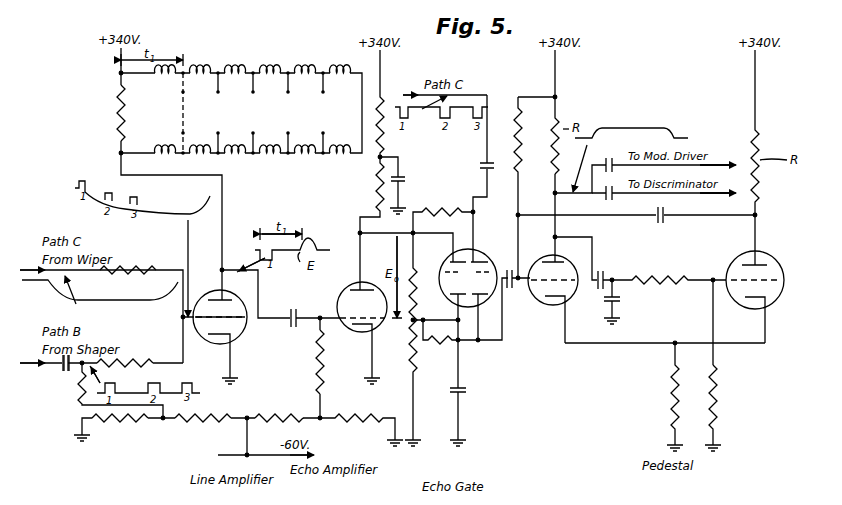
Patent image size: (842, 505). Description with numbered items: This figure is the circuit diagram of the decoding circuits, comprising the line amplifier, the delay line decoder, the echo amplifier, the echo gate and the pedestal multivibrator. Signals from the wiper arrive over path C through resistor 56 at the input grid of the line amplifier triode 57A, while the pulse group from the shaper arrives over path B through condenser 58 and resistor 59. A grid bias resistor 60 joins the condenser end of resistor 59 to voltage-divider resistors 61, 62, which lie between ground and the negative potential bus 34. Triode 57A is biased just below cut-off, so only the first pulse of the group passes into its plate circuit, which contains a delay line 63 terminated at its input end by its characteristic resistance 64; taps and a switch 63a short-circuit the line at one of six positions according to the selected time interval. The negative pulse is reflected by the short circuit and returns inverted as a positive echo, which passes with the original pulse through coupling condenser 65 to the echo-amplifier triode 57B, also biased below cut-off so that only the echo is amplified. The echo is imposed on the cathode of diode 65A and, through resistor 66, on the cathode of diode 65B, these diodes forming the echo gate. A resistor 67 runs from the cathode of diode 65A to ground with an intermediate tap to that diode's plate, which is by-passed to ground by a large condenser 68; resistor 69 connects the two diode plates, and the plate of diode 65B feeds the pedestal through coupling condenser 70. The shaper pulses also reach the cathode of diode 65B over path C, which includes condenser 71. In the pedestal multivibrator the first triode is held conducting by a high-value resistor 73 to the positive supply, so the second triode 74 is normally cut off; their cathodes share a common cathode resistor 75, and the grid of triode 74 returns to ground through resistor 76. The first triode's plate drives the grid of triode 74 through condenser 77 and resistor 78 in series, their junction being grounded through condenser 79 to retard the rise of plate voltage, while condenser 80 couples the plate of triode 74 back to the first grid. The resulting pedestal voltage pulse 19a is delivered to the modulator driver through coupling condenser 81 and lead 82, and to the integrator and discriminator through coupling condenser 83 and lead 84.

The pedestal voltage pulse 19a is at (637, 128).
The negative potential bus 34 is at (258, 453).
The resistor 56 is at (138, 270).
The line amplifier triode 57A is at (239, 337).
The echo-amplifier triode 57B is at (350, 342).
The condenser 58 is at (62, 368).
The resistor 59 is at (142, 361).
The grid bias resistor 60 is at (78, 391).
The voltage-divider resistor 61 is at (116, 425).
The voltage-divider resistor 62 is at (193, 424).
The delay line 63 is at (275, 123).
The switch 63a is at (184, 113).
The characteristic resistance 64 is at (118, 112).
The coupling condenser 65 is at (290, 309).
The diode 65A is at (447, 266).
The diode 65B is at (481, 266).
The resistor 66 is at (436, 213).
The resistor 67 is at (409, 348).
The condenser 68 is at (450, 393).
The resistor 69 is at (430, 343).
The coupling condenser 70 is at (514, 290).
The condenser 71 is at (490, 163).
The resistor 73 is at (517, 134).
The triode 74 is at (764, 257).
The common cathode resistor 75 is at (671, 402).
The resistor 76 is at (718, 394).
The condenser 77 is at (600, 271).
The resistor 78 is at (668, 278).
The condenser 79 is at (604, 300).
The condenser 80 is at (665, 222).
The coupling condenser 81 is at (605, 165).
The lead 82 is at (722, 165).
The coupling condenser 83 is at (606, 194).
The lead 84 is at (735, 193).